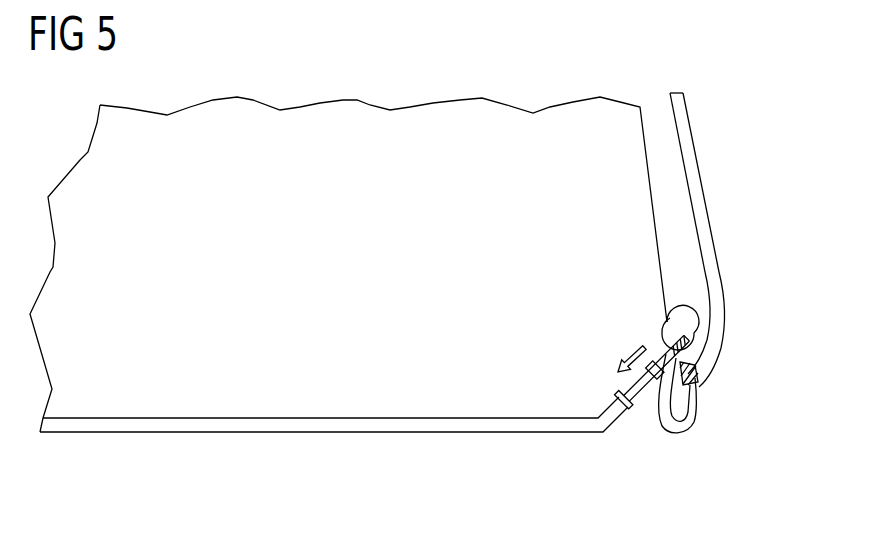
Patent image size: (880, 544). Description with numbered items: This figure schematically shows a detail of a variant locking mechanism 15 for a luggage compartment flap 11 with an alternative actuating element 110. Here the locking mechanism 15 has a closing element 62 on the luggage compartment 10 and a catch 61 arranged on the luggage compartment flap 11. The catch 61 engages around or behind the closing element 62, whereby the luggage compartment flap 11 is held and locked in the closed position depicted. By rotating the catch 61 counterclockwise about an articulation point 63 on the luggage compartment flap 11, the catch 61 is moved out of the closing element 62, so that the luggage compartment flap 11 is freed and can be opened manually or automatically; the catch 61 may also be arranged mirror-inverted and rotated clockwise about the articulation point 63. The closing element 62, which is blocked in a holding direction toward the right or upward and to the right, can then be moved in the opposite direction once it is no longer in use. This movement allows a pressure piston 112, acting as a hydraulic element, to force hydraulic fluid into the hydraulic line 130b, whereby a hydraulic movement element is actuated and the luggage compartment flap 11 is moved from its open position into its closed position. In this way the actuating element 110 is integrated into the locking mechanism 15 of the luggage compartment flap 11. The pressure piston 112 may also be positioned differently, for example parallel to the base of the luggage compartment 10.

The luggage compartment 10 is at (430, 123).
The luggage compartment flap 11 is at (721, 240).
The locking mechanism 15 is at (724, 281).
The catch 61 is at (688, 407).
The closing element 62 is at (694, 393).
The actuating element 110 is at (680, 327).
The articulation point 63 is at (703, 372).
The pressure piston 112 is at (636, 402).
The hydraulic line 130b is at (452, 422).